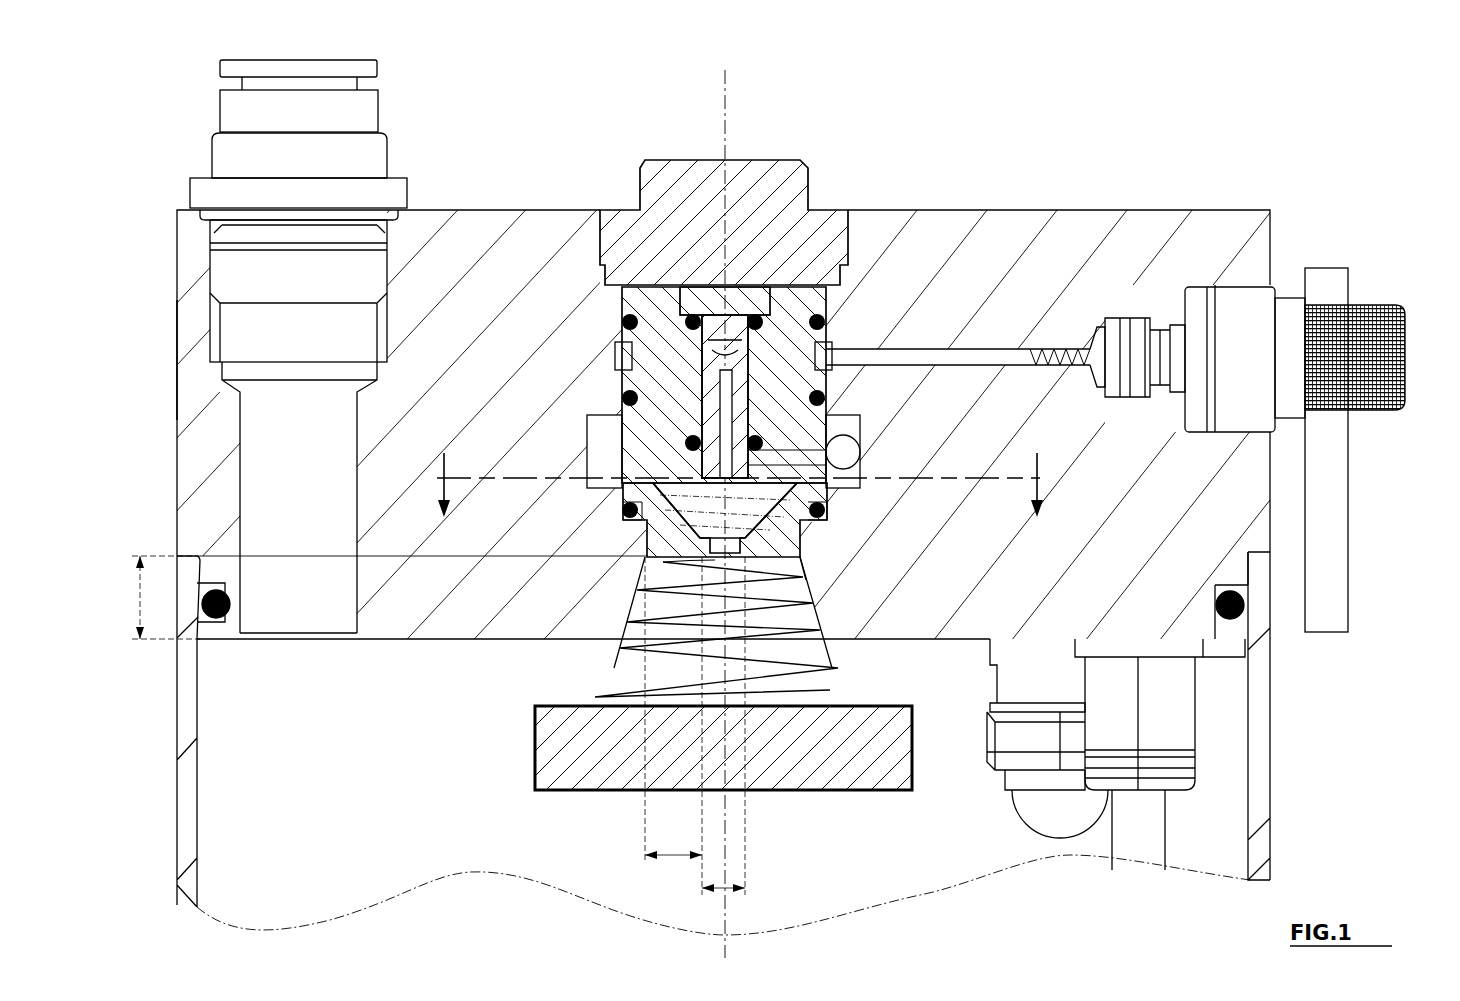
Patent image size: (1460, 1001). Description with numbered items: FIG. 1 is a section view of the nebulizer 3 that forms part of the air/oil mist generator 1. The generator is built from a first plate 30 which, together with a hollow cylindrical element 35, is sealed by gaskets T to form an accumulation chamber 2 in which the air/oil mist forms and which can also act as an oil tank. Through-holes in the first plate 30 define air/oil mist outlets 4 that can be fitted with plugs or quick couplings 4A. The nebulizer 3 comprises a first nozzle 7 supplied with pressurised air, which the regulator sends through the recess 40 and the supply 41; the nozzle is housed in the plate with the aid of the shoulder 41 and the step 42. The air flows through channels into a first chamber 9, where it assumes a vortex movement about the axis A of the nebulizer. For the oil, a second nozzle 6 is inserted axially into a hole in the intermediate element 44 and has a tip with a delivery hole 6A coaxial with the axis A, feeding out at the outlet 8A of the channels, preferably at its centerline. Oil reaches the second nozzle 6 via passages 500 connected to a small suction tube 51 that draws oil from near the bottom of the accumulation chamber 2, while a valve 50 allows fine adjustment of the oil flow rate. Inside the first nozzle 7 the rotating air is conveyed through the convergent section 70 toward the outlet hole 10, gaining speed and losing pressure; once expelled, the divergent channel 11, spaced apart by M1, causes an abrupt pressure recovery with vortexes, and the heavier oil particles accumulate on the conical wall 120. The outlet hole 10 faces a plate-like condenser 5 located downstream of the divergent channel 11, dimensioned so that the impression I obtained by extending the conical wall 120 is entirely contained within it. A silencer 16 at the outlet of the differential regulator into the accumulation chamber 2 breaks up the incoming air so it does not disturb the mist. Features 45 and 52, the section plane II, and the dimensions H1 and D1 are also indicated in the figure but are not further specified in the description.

The air/oil mist generator 1 is at (1296, 196).
The accumulation chamber 2 is at (348, 771).
The nebulizer 3 is at (856, 182).
The air/oil mist outlet 4 is at (316, 450).
The plug or quick coupling 4A is at (268, 60).
The condenser 5 is at (818, 765).
The second nozzle 6 is at (616, 330).
The delivery hole 6A is at (622, 470).
The first nozzle 7 is at (836, 488).
The outlet of the channels 8A is at (784, 470).
The first chamber 9 is at (640, 645).
The outlet hole 10 is at (802, 548).
The divergent channel 11 is at (822, 620).
The silencer 16 is at (1033, 742).
The first plate 30 is at (196, 366).
The hollow cylindrical element 35 is at (1265, 718).
The recess 40 is at (602, 440).
The supply 41 is at (836, 352).
The step 42 is at (633, 556).
The intermediate element 44 is at (662, 300).
The cap 45 is at (772, 186).
The valve 50 is at (1400, 312).
The small suction tube 51 is at (1158, 818).
The mounting plate 52 is at (1106, 300).
The convergent section 70 is at (806, 522).
The conical wall 120 is at (600, 676).
The passages 500 is at (1002, 352).
The axis A is at (728, 102).
The impression I is at (818, 706).
The section line II is at (739, 472).
The gaskets T is at (1258, 626).
The height H1 is at (378, 597).
The spacing of the divergent section M1 is at (673, 726).
The diameter D1 is at (723, 726).